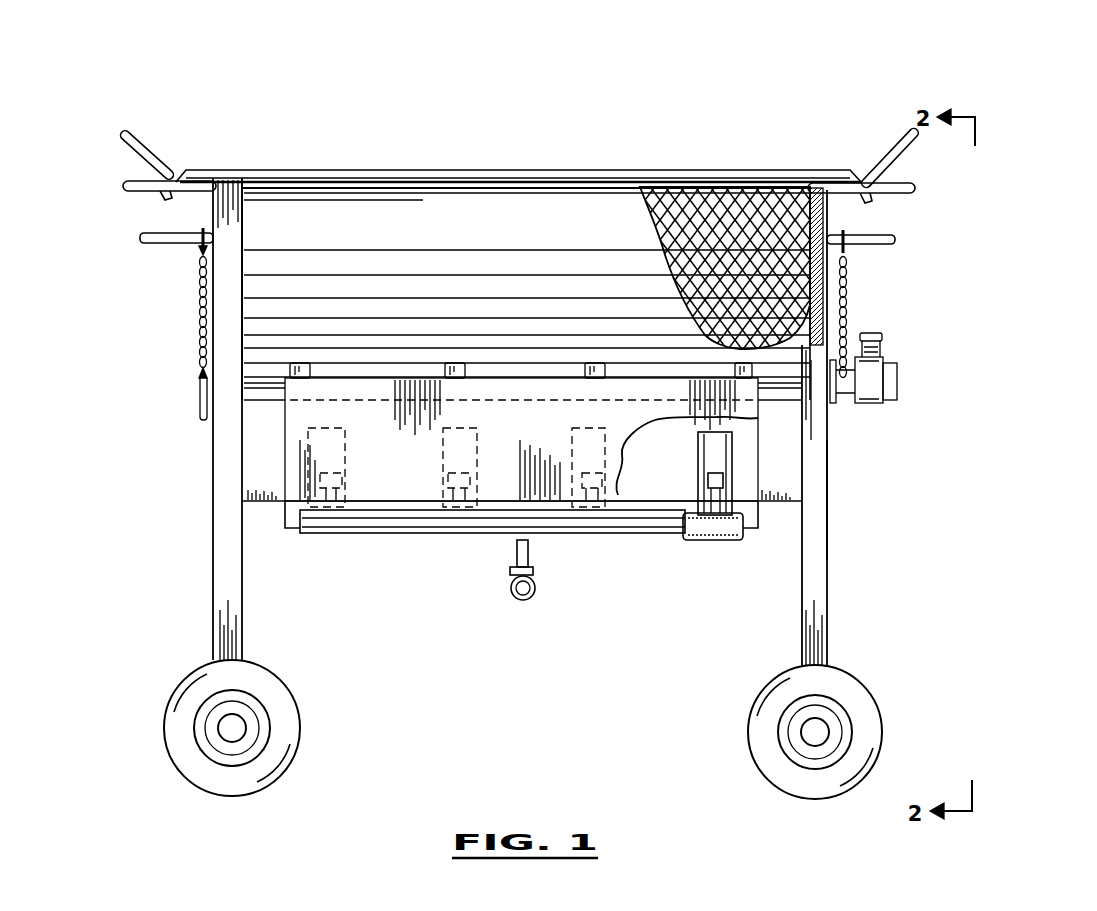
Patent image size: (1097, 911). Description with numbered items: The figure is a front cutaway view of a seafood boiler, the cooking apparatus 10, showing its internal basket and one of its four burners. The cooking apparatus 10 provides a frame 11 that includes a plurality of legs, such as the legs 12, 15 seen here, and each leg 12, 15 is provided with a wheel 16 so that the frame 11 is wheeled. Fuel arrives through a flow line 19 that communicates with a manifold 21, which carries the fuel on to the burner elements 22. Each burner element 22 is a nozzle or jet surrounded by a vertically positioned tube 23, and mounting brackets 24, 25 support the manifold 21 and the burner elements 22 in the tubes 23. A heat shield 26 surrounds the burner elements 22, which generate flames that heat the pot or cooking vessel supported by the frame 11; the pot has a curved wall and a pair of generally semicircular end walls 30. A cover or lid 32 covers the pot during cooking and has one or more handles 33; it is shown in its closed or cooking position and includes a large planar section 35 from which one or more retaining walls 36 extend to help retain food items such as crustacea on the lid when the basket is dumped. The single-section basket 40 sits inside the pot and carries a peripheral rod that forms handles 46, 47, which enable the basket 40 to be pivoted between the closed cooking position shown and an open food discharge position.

The cooking apparatus 10 is at (1013, 68).
The frame 11 is at (822, 538).
The leg 12 is at (828, 613).
The leg 15 is at (220, 618).
The wheel 16 is at (297, 710).
The flow line 19 is at (510, 583).
The manifold 21 is at (365, 522).
The burner element 22 is at (452, 475).
The tube 23 is at (346, 447).
The mounting bracket 24 is at (288, 513).
The mounting bracket 25 is at (745, 526).
The heat shield 26 is at (512, 388).
The end wall 30 is at (212, 218).
The cover or lid 32 is at (478, 170).
The handle 33 is at (137, 139).
The large planar section 35 is at (320, 170).
The retaining wall 36 is at (168, 193).
The basket 40 is at (733, 200).
The handle 46 is at (128, 182).
The handle 47 is at (925, 186).